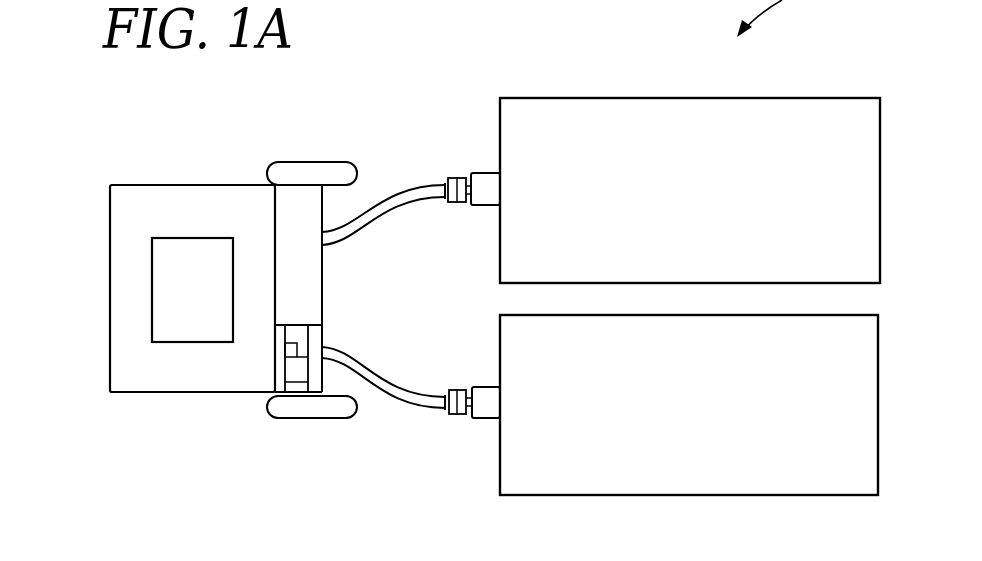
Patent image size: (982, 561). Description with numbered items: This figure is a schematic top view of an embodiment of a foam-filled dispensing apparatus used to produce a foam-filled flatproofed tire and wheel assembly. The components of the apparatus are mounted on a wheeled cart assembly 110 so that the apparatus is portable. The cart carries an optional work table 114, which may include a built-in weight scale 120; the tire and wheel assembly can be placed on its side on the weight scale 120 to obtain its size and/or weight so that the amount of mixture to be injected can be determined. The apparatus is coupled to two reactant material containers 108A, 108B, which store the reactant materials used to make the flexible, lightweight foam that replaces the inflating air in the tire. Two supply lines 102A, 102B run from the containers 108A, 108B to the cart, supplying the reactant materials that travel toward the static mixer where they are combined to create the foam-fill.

The wheeled cart assembly 110 is at (178, 412).
The work table 114 is at (109, 204).
The weight scale 120 is at (163, 290).
The supply line 102A is at (413, 190).
The supply line 102B is at (380, 358).
The reactant material container 108A is at (690, 190).
The reactant material container 108B is at (689, 405).